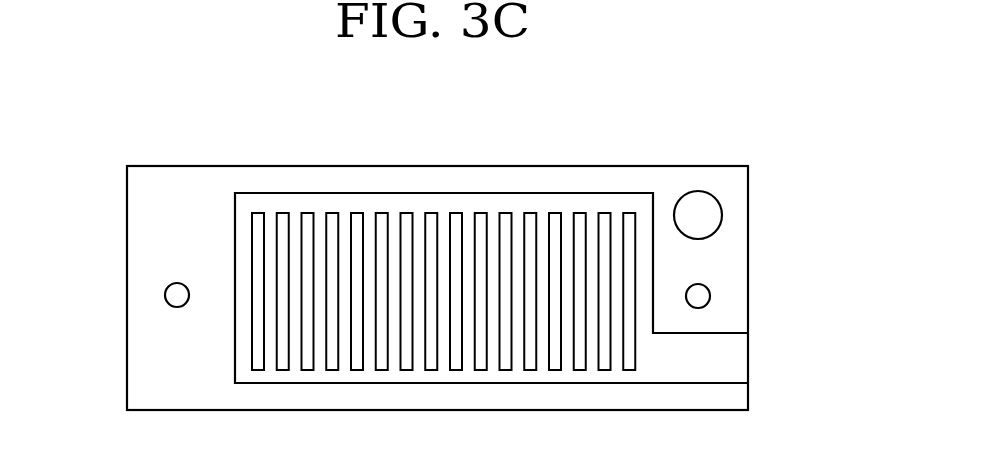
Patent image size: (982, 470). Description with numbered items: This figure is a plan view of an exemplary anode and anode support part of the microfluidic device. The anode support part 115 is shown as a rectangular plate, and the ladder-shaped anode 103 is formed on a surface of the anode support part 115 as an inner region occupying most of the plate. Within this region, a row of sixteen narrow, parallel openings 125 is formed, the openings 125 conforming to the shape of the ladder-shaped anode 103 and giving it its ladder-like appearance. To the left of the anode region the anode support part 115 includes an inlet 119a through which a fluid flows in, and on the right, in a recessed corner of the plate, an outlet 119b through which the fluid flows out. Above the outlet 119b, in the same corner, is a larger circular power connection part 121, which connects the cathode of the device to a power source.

The ladder-shaped anode 103 is at (445, 202).
The anode support part 115 is at (737, 258).
The inlet 119a is at (172, 294).
The outlet 119b is at (705, 296).
The power connection part 121 is at (697, 200).
The openings 125 is at (555, 233).